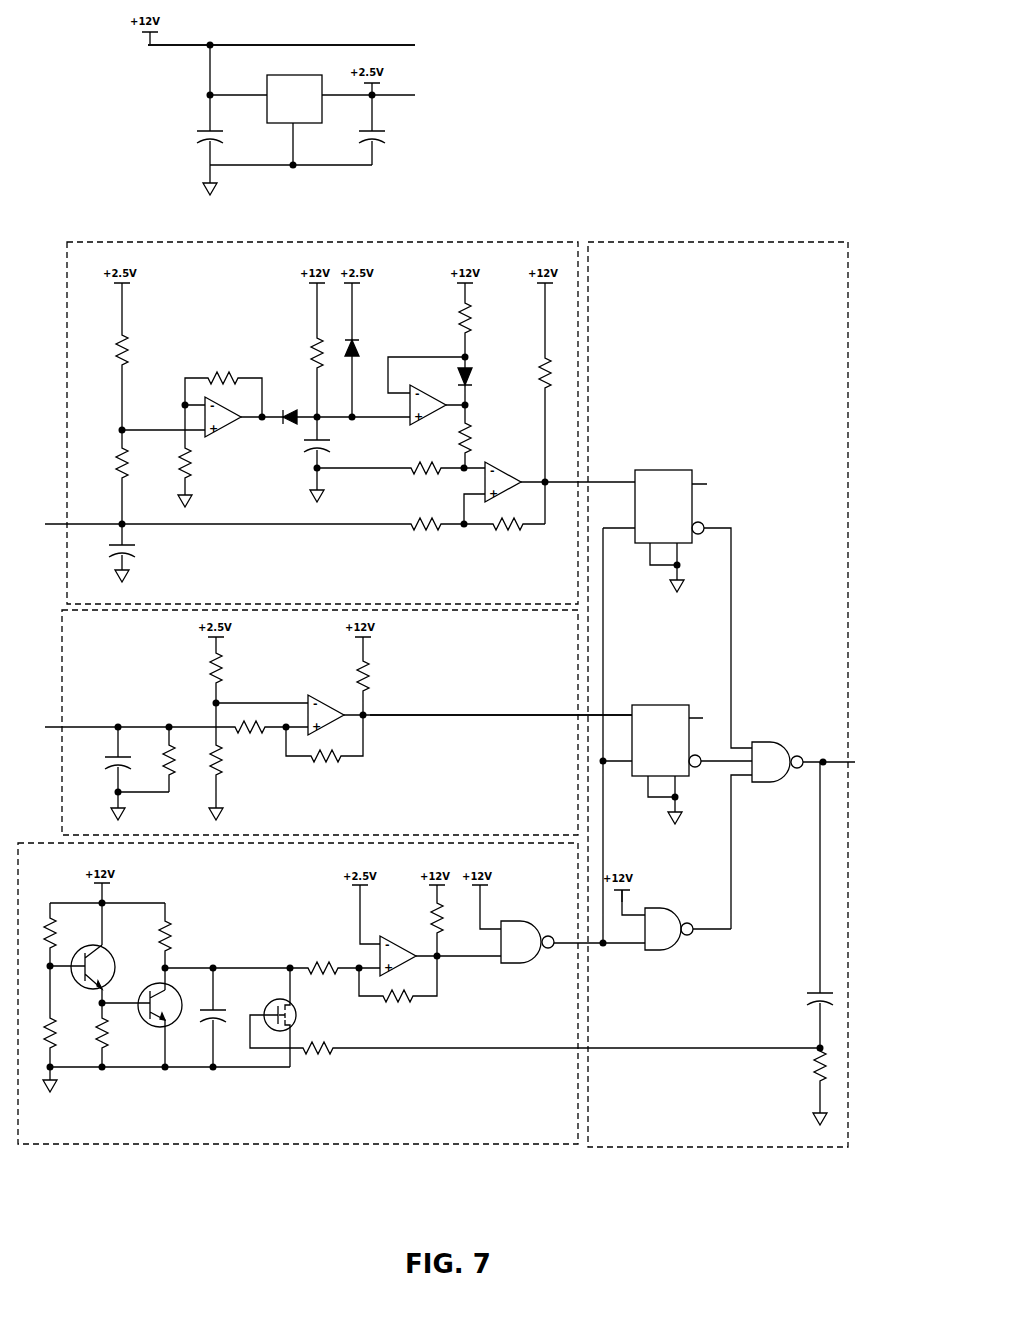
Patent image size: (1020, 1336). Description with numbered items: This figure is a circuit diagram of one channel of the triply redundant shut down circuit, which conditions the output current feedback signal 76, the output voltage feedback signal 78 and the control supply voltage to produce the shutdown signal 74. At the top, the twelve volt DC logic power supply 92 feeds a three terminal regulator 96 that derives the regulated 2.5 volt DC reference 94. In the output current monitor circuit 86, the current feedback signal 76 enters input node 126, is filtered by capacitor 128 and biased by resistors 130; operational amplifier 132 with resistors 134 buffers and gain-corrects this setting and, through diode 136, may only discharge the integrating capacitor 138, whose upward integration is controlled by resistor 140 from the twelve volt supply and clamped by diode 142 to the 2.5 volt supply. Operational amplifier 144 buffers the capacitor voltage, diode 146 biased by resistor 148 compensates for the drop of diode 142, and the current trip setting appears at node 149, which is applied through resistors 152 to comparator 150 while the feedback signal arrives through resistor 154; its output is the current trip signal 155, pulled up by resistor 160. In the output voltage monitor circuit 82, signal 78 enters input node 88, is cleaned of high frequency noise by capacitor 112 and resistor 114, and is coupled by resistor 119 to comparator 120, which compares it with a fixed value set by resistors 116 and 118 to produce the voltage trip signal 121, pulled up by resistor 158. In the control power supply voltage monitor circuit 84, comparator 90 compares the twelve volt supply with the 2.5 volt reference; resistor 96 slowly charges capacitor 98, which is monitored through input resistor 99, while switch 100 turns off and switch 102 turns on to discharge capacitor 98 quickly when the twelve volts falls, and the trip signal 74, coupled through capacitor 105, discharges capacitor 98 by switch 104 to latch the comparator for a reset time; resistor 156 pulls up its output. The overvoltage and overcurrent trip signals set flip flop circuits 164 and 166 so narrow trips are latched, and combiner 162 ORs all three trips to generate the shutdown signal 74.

The shutdown signal 74 is at (840, 762).
The output current feedback signal 76 is at (215, 523).
The output voltage feedback signal 78 is at (127, 726).
The output voltage monitor circuit 82 is at (320, 722).
The control power supply voltage monitor circuit 84 is at (298, 993).
The output current monitor circuit 86 is at (322, 423).
The input node 88 is at (68, 727).
The control power comparator 90 is at (405, 945).
The twelve volt DC logic power supply 92 is at (122, 905).
The 2.5 volt DC reference 94 is at (358, 928).
The three terminal regulator / resistor 96 is at (267, 90).
The capacitor 98 is at (225, 1016).
The input resistor 99 is at (318, 960).
The switch 100 is at (115, 958).
The switch 102 is at (183, 1018).
The switch 104 is at (298, 1022).
The capacitor 105 is at (808, 1000).
The capacitor 112 is at (110, 765).
The resistor 114 is at (178, 760).
The resistor 116 is at (210, 678).
The resistor 118 is at (225, 760).
The resistor 119 is at (252, 724).
The output overvoltage comparator 120 is at (328, 700).
The voltage trip signal 121 is at (525, 716).
The input node 126 is at (72, 522).
The capacitor 128 is at (128, 553).
The resistors 130 is at (128, 356).
The operational amplifier 132 is at (222, 436).
The resistors 134 is at (222, 366).
The diode 136 is at (288, 410).
The integrating capacitor 138 is at (305, 448).
The resistor 140 is at (312, 348).
The diode 142 is at (360, 350).
The operational amplifier 144 is at (422, 430).
The diode 146 is at (470, 378).
The resistor 148 is at (460, 330).
The node 149 is at (470, 408).
The output overcurrent comparator 150 is at (514, 474).
The resistors 152 is at (470, 445).
The resistor 154 is at (425, 536).
The output current trip signal 155 is at (563, 485).
The output pull up resistor 156 is at (448, 912).
The output pull up resistor 158 is at (375, 680).
The output pull up resistor 160 is at (540, 370).
The combiner 162 is at (765, 742).
The digital flip flop circuit 164 is at (662, 705).
The digital flip flop circuit 166 is at (665, 470).